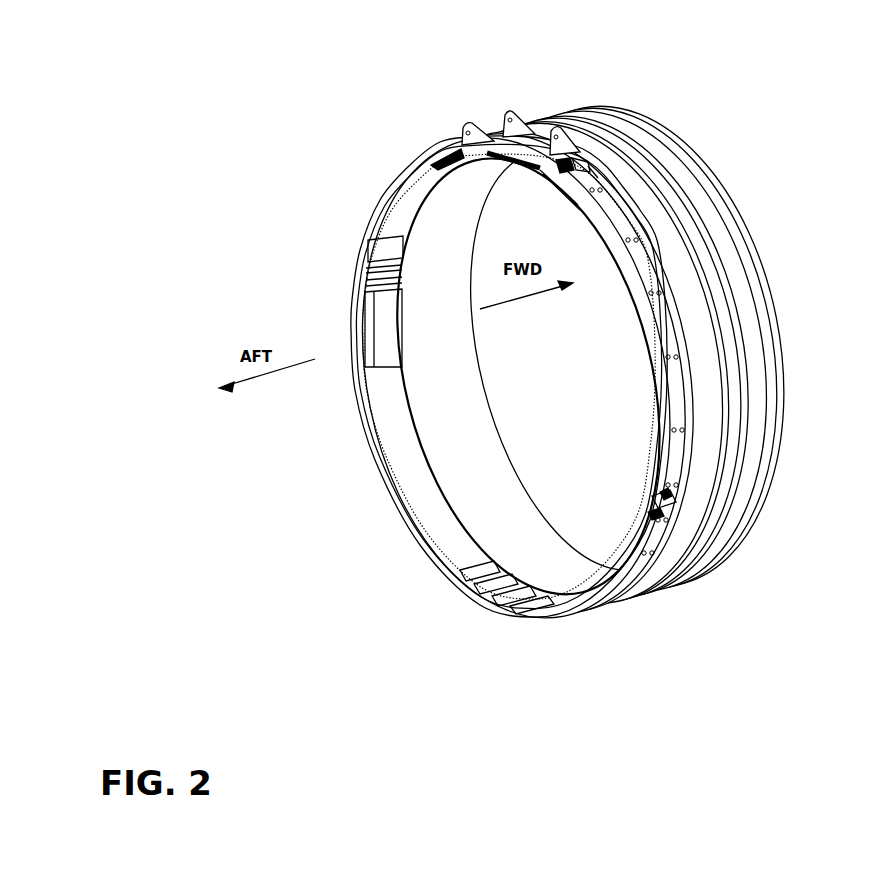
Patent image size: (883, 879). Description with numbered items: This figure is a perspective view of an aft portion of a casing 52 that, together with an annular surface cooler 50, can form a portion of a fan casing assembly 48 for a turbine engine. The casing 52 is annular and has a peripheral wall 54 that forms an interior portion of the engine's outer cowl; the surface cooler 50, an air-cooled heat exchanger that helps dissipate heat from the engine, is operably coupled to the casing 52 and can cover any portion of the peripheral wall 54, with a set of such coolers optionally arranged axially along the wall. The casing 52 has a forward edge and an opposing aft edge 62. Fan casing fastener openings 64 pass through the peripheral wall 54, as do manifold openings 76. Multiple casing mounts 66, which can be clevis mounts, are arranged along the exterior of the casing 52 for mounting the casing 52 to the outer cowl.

The fan casing assembly 48 is at (528, 342).
The surface cooler 50 is at (446, 530).
The casing 52 is at (562, 362).
The peripheral wall 54 is at (683, 403).
The aft edge 62 is at (760, 267).
The fan casing fastener openings 64 is at (597, 188).
The casing mounts 66 is at (520, 112).
The manifold openings 76 is at (585, 170).